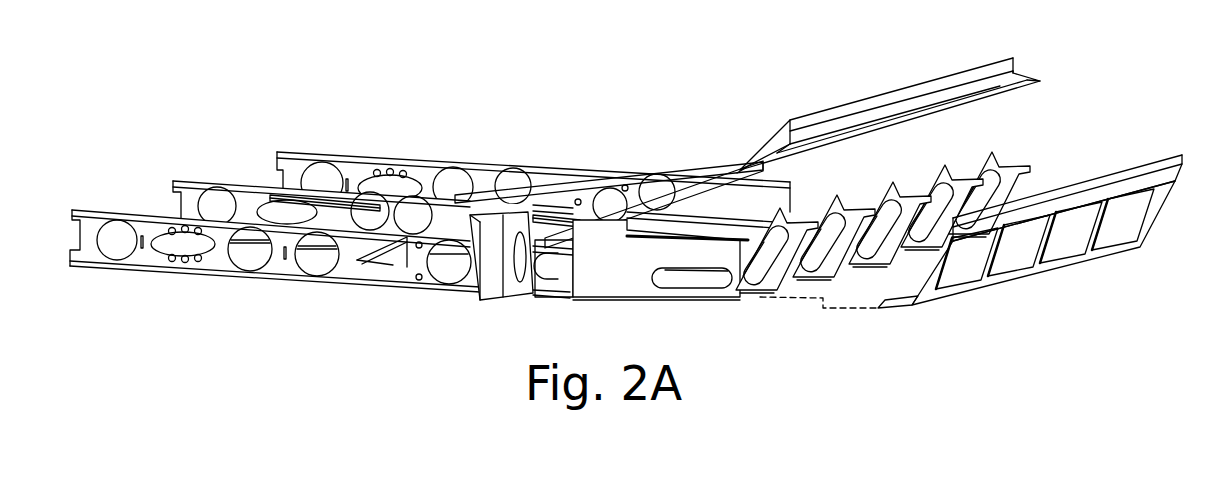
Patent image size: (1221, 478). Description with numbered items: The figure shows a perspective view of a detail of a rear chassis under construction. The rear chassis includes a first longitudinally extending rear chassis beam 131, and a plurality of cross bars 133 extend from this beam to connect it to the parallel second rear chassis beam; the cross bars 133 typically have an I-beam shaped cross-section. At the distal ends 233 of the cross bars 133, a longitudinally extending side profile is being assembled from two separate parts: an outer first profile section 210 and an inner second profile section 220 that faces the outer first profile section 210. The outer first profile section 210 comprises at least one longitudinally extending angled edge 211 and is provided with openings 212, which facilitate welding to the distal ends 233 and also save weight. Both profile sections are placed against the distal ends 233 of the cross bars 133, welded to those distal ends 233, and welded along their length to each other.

The first longitudinally extending rear chassis beam 131 is at (428, 344).
The cross bars 133 is at (700, 250).
The outer first profile section 210 is at (1047, 303).
The longitudinally extending angled edge 211 is at (1070, 215).
The openings 212 is at (957, 272).
The inner second profile section 220 is at (827, 110).
The distal ends 233 is at (787, 292).